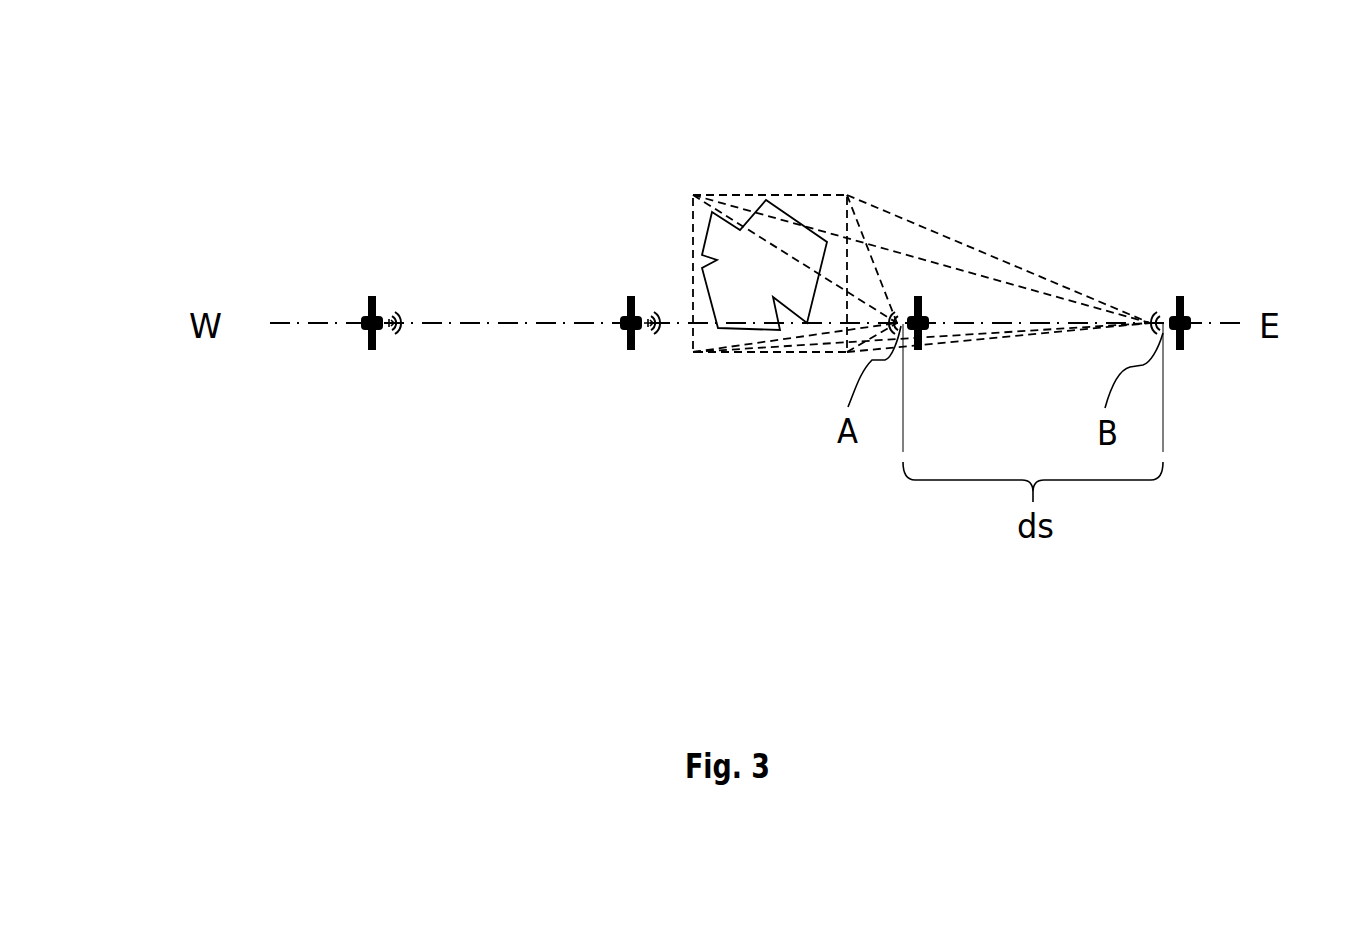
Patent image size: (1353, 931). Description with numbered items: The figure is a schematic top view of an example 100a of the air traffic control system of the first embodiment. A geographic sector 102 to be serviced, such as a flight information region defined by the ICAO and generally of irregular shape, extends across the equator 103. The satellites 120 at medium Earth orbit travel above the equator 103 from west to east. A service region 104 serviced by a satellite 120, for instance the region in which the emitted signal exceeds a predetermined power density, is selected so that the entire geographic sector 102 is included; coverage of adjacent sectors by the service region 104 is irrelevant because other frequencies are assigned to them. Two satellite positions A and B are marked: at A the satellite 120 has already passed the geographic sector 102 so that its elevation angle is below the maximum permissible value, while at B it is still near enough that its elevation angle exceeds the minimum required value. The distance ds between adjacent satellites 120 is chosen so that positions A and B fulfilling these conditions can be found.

The air traffic control system example 100a is at (1190, 152).
The geographic sector 102 is at (766, 200).
The equator 103 is at (317, 324).
The service region 104 is at (694, 222).
The satellite 120 is at (370, 296).